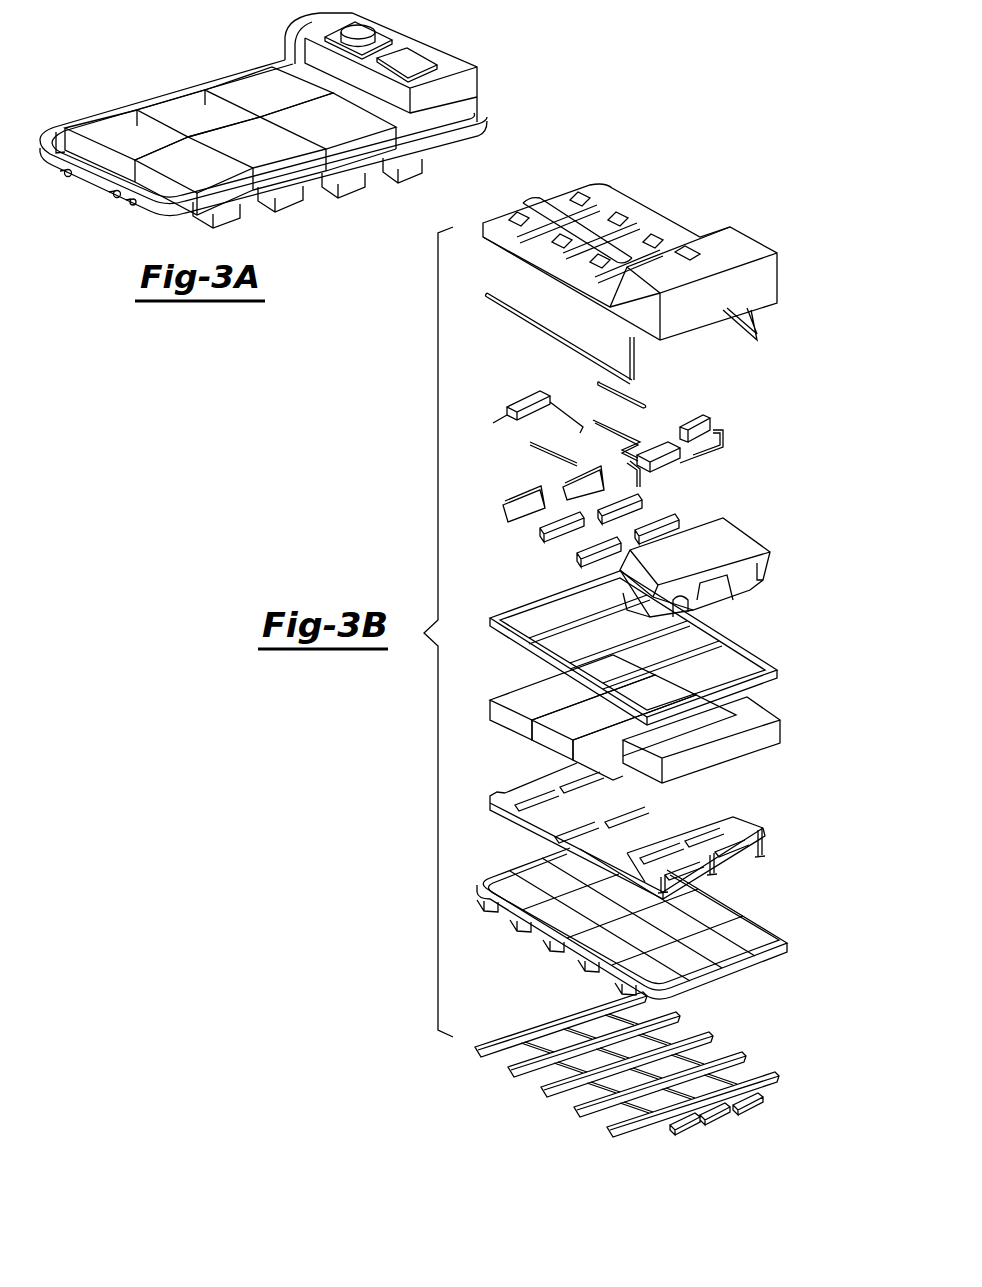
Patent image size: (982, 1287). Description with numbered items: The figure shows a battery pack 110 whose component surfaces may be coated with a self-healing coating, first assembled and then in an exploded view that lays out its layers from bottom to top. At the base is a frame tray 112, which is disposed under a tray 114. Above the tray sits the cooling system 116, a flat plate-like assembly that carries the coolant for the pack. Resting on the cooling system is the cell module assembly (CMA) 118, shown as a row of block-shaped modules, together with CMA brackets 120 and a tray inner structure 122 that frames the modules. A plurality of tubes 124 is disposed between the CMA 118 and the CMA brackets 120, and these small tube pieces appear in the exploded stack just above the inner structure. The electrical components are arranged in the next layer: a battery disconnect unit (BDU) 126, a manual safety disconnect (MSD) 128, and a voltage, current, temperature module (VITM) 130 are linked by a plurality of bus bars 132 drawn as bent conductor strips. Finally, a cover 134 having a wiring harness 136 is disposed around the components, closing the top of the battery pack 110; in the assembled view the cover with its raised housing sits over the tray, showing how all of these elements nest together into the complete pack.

In FIG. 3A, the battery pack 110 is at (120, 50).
In FIG. 3B, the battery pack 110 is at (700, 138).
In FIG. 3B, the frame tray 112 is at (765, 1068).
In FIG. 3B, the tray 114 is at (773, 940).
In FIG. 3B, the cooling system 116 is at (757, 830).
In FIG. 3B, the cell module assembly (CMA) 118 is at (747, 763).
In FIG. 3B, the CMA brackets 120 is at (716, 497).
In FIG. 3B, the tray inner structure 122 is at (747, 660).
In FIG. 3B, the tubes 124 is at (582, 663).
In FIG. 3B, the battery disconnect unit (BDU) 126 is at (523, 397).
In FIG. 3B, the manual safety disconnect (MSD) 128 is at (697, 425).
In FIG. 3B, the voltage, current, temperature module (VITM) 130 is at (680, 448).
In FIG. 3B, the bus bars 132 is at (540, 465).
In FIG. 3B, the cover 134 is at (733, 240).
In FIG. 3B, the wiring harness 136 is at (762, 321).